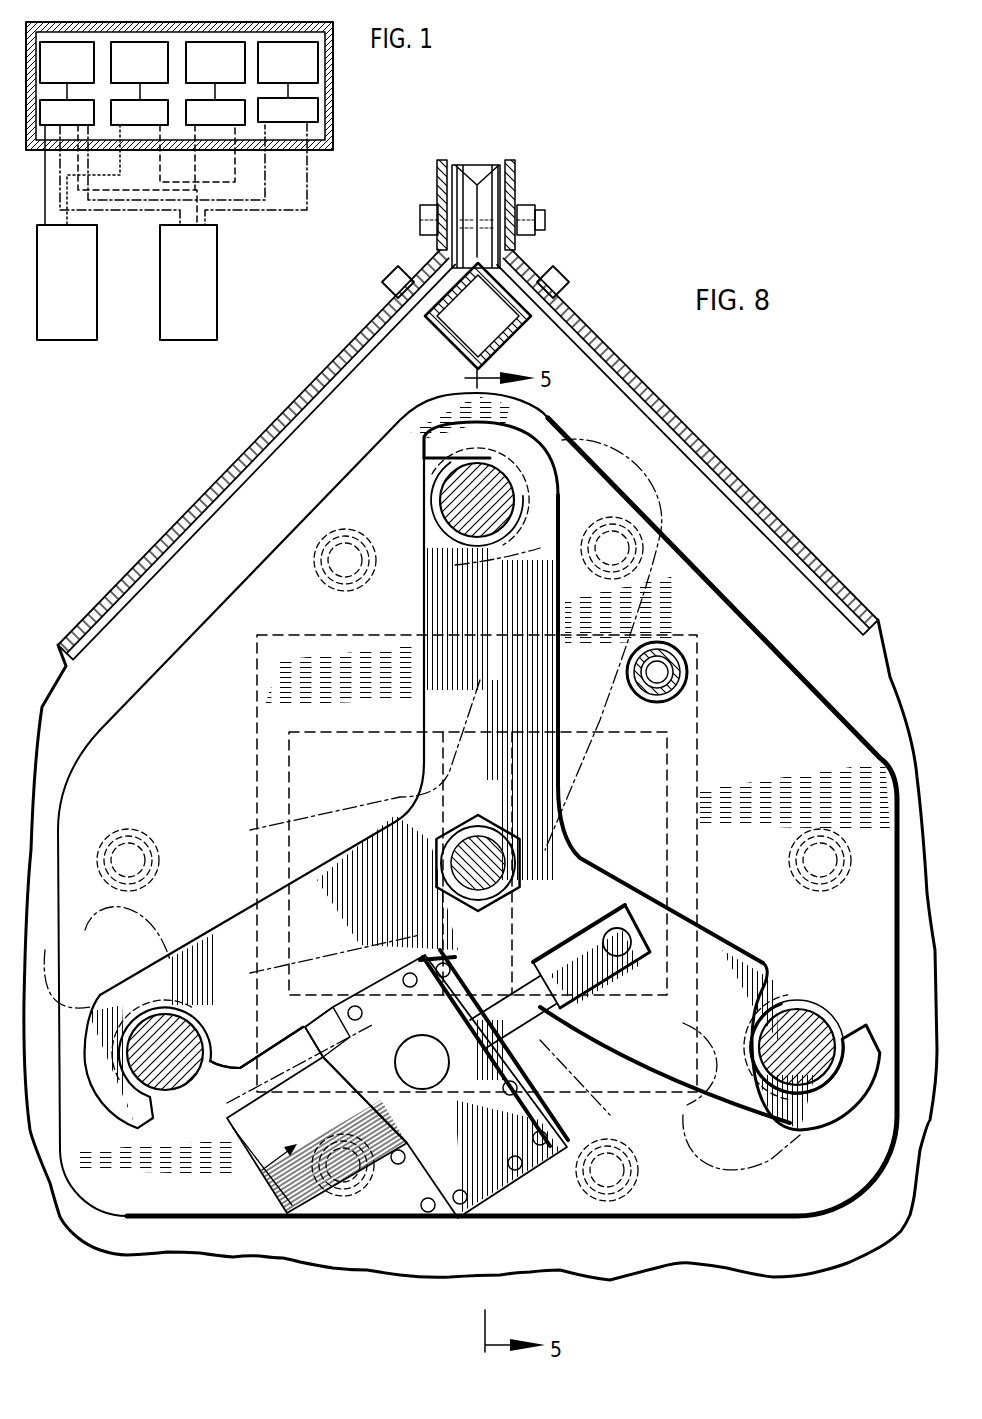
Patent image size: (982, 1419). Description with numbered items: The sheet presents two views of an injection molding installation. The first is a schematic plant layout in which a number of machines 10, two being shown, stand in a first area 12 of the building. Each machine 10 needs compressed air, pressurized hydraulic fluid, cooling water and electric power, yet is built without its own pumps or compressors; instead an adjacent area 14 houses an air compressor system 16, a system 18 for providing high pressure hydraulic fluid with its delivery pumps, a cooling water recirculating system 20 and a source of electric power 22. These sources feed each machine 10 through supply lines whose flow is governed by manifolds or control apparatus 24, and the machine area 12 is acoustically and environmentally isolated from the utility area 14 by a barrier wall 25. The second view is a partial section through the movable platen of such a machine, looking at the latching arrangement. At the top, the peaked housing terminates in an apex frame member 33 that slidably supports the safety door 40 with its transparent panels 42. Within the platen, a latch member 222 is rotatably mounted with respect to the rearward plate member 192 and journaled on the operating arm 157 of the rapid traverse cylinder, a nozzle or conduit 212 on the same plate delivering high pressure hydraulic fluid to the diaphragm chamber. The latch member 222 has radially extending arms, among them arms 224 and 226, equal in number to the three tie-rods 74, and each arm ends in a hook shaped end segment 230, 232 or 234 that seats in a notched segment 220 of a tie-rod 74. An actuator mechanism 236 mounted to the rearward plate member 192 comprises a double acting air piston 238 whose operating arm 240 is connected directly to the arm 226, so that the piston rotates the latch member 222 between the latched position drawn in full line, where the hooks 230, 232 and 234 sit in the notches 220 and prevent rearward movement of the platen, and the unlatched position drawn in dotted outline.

In FIG. 1, the machine 10 is at (172, 285).
In FIG. 1, the first area 12 is at (268, 214).
In FIG. 1, the area 14 is at (335, 58).
In FIG. 1, the air compressor system 16 is at (75, 72).
In FIG. 1, the system for providing high pressure hydraulic fluid 18 is at (147, 72).
In FIG. 1, the cooling water recirculating system 20 is at (222, 72).
In FIG. 1, the source of electric power 22 is at (296, 72).
In FIG. 1, the manifolds or control apparatus 24 is at (228, 107).
In FIG. 1, the barrier wall 25 is at (321, 150).
In FIG. 8, the apex frame member 33 is at (505, 262).
In FIG. 8, the safety door 40 is at (568, 293).
In FIG. 8, the transparent panels 42 is at (622, 360).
In FIG. 8, the tie-rods 74 is at (452, 497).
In FIG. 8, the operating arm 157 is at (466, 850).
In FIG. 8, the rearward plate member 192 is at (377, 1202).
In FIG. 8, the conduit 212 is at (683, 672).
In FIG. 8, the notched segments 220 is at (418, 523).
In FIG. 8, the latch member 222 is at (458, 659).
In FIG. 8, the latch arm 224 is at (432, 578).
In FIG. 8, the latch arm 226 is at (705, 945).
In FIG. 8, the hook shaped end segment 230 is at (453, 430).
In FIG. 8, the hook shaped end segment 232 is at (862, 1038).
In FIG. 8, the hook shaped end segment 234 is at (117, 1095).
In FIG. 8, the actuator mechanism 236 is at (253, 1130).
In FIG. 8, the double acting air piston 238 is at (252, 1132).
In FIG. 8, the operating arm 240 is at (556, 1006).